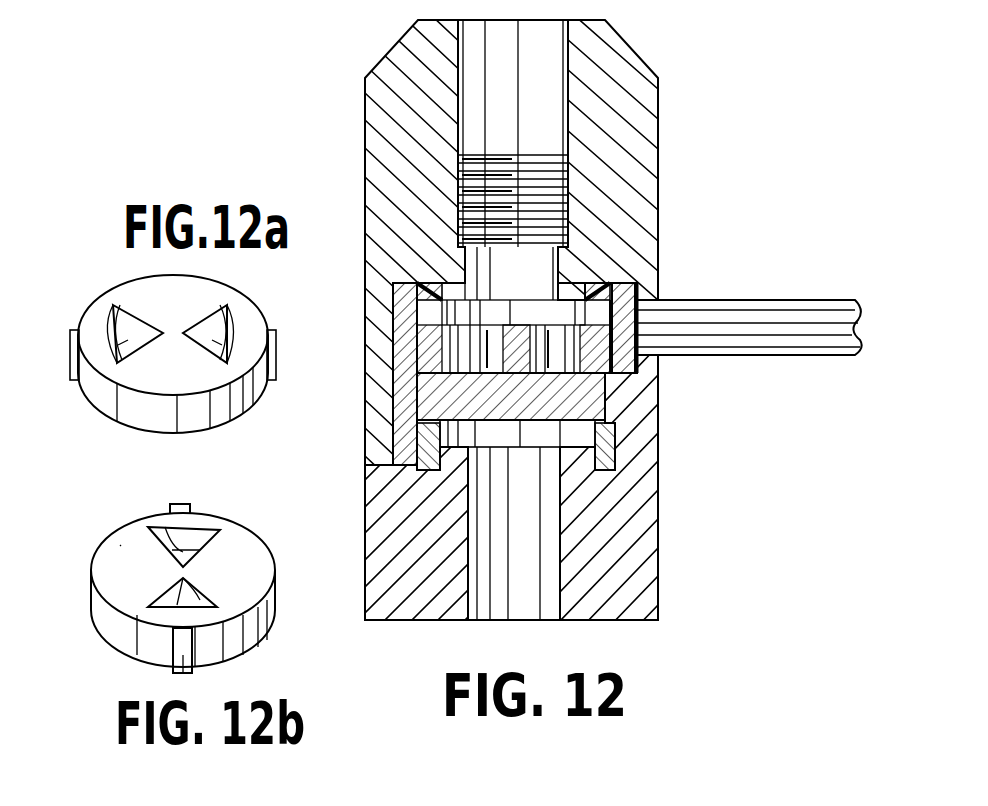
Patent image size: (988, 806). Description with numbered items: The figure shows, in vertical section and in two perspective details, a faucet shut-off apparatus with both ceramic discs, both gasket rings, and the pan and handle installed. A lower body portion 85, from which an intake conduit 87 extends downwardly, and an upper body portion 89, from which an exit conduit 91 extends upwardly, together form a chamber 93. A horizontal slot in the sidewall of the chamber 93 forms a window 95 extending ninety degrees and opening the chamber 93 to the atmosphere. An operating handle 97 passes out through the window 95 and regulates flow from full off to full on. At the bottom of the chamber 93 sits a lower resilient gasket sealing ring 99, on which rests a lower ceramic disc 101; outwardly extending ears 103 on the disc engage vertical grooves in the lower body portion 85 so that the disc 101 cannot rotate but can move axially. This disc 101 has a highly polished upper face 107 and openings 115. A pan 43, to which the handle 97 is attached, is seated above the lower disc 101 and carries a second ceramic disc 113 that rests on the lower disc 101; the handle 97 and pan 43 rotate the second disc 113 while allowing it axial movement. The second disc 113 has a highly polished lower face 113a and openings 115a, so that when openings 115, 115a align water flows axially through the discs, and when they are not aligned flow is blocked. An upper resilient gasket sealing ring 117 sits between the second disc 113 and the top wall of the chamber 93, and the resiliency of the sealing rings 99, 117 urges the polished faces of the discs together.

In FIG. 12, the pan 43 is at (400, 320).
In FIG. 12, the lower body portion 85 is at (625, 550).
In FIG. 12, the intake conduit 87 is at (527, 605).
In FIG. 12, the upper body portion 89 is at (633, 155).
In FIG. 12, the exit conduit 91 is at (545, 97).
In FIG. 12, the chamber 93 is at (567, 432).
In FIG. 12, the window 95 is at (659, 285).
In FIG. 12, the operating handle 97 is at (752, 318).
In FIG. 12, the lower resilient gasket sealing ring 99 is at (607, 462).
In FIG. 12, the lower ceramic disc 101 is at (597, 385).
In FIG. 12b, the lower ceramic disc 101 is at (115, 567).
In FIG. 12b, the ears 103 is at (185, 503).
In FIG. 12b, the upper face 107 is at (120, 545).
In FIG. 12, the second ceramic disc 113 is at (437, 357).
In FIG. 12a, the second ceramic disc 113 is at (149, 353).
In FIG. 12a, the lower face 113a is at (183, 430).
In FIG. 12b, the openings 115 is at (173, 530).
In FIG. 12, the openings 115a is at (545, 345).
In FIG. 12a, the openings 115a is at (125, 328).
In FIG. 12, the upper resilient gasket sealing ring 117 is at (400, 282).